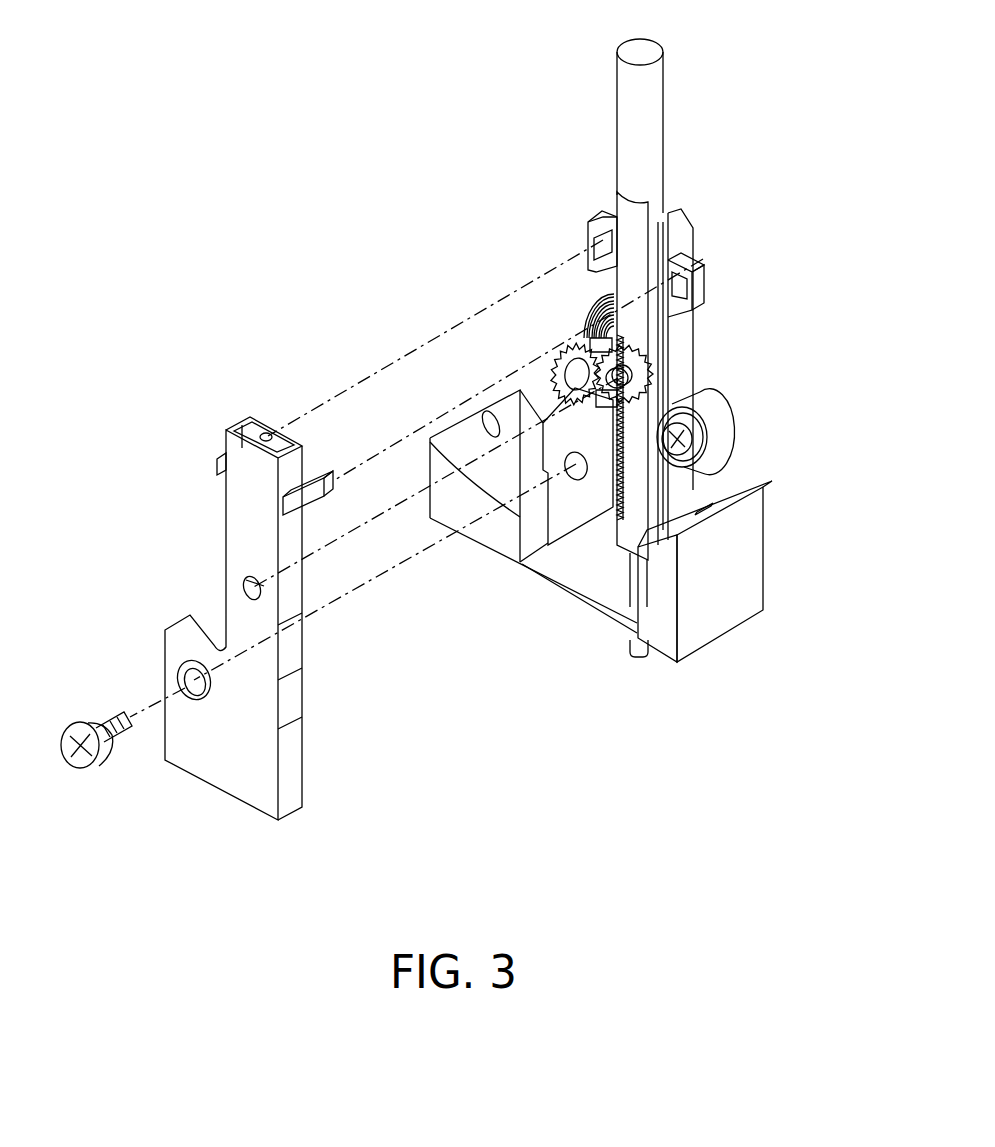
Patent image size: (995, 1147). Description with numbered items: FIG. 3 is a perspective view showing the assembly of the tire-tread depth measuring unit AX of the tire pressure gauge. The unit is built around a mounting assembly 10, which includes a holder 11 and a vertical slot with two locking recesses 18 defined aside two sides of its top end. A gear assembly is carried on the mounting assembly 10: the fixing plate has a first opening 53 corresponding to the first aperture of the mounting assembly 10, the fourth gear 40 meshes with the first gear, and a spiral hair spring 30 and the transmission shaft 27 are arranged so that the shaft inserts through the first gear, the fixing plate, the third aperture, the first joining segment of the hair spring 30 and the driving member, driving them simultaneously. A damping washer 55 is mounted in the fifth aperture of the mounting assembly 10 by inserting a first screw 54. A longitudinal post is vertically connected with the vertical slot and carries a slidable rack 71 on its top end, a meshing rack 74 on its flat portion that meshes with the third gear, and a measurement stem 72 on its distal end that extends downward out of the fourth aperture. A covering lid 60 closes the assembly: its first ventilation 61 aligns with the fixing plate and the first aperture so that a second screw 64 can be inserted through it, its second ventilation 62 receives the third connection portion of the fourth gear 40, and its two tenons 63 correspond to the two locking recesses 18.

The mounting assembly 10 is at (784, 225).
The holder 11 is at (717, 590).
The locking recesses 18 is at (598, 240).
The transmission shaft 27 is at (576, 368).
The hair spring 30 is at (585, 308).
The fourth gear 40 is at (642, 347).
The first opening 53 is at (575, 478).
The first screw 54 is at (692, 441).
The damping washer 55 is at (720, 404).
The covering lid 60 is at (250, 508).
The first ventilation 61 is at (192, 676).
The second ventilation 62 is at (243, 588).
The tenons 63 is at (327, 480).
The second screw 64 is at (102, 722).
The slidable rack 71 is at (637, 100).
The measurement stem 72 is at (641, 660).
The meshing rack 74 is at (613, 468).
The tire-tread depth measuring unit AX is at (240, 208).